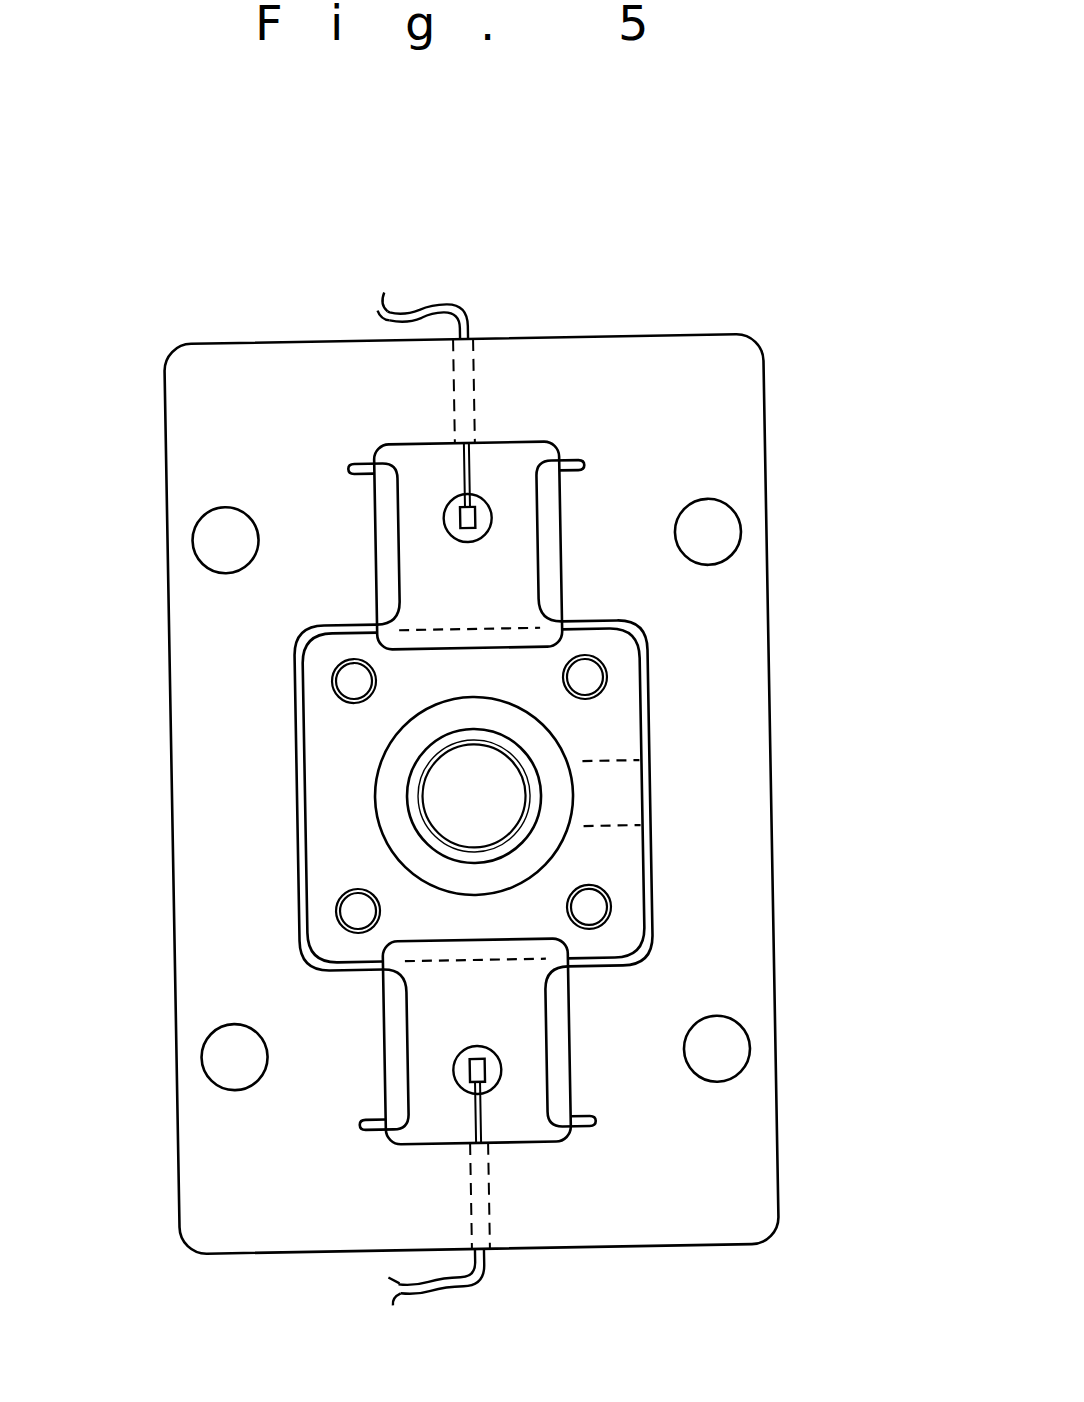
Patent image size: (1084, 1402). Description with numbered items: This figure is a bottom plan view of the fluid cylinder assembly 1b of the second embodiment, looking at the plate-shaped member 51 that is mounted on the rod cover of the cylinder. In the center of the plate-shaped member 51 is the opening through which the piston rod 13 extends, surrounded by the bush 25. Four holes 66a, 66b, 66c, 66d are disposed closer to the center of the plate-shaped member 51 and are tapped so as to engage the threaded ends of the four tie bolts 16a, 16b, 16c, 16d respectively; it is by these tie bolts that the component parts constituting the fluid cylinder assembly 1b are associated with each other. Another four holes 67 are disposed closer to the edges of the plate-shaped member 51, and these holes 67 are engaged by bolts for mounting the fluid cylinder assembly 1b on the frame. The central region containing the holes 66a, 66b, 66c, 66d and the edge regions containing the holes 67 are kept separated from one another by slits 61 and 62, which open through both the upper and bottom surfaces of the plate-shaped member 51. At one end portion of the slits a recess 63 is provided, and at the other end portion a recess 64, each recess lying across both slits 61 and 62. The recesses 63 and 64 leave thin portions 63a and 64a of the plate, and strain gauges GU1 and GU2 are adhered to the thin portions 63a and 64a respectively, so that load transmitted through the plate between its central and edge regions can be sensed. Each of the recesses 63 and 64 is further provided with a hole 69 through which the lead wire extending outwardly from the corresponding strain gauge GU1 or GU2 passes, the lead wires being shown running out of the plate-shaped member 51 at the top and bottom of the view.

The fluid cylinder assembly 1b is at (358, 246).
The plate-shaped member 51 is at (752, 410).
The holes 67 is at (720, 513).
The bush 25 is at (387, 817).
The piston rod 13 is at (502, 773).
The tie bolt 16a is at (583, 675).
The tie bolt 16b is at (346, 677).
The tie bolt 16c is at (352, 923).
The tie bolt 16d is at (598, 905).
The hole 66a is at (594, 680).
The hole 66b is at (348, 700).
The hole 66c is at (350, 906).
The hole 66d is at (594, 921).
The recess 63 is at (544, 504).
The thin portion 63a is at (500, 462).
The recess 64 is at (429, 1083).
The thin portion 64a is at (427, 1122).
The slit 62 is at (378, 557).
The slit 61 is at (558, 538).
The strain gauge GU1 is at (448, 518).
The strain gauge GU2 is at (493, 1075).
The hole 69 is at (477, 378).